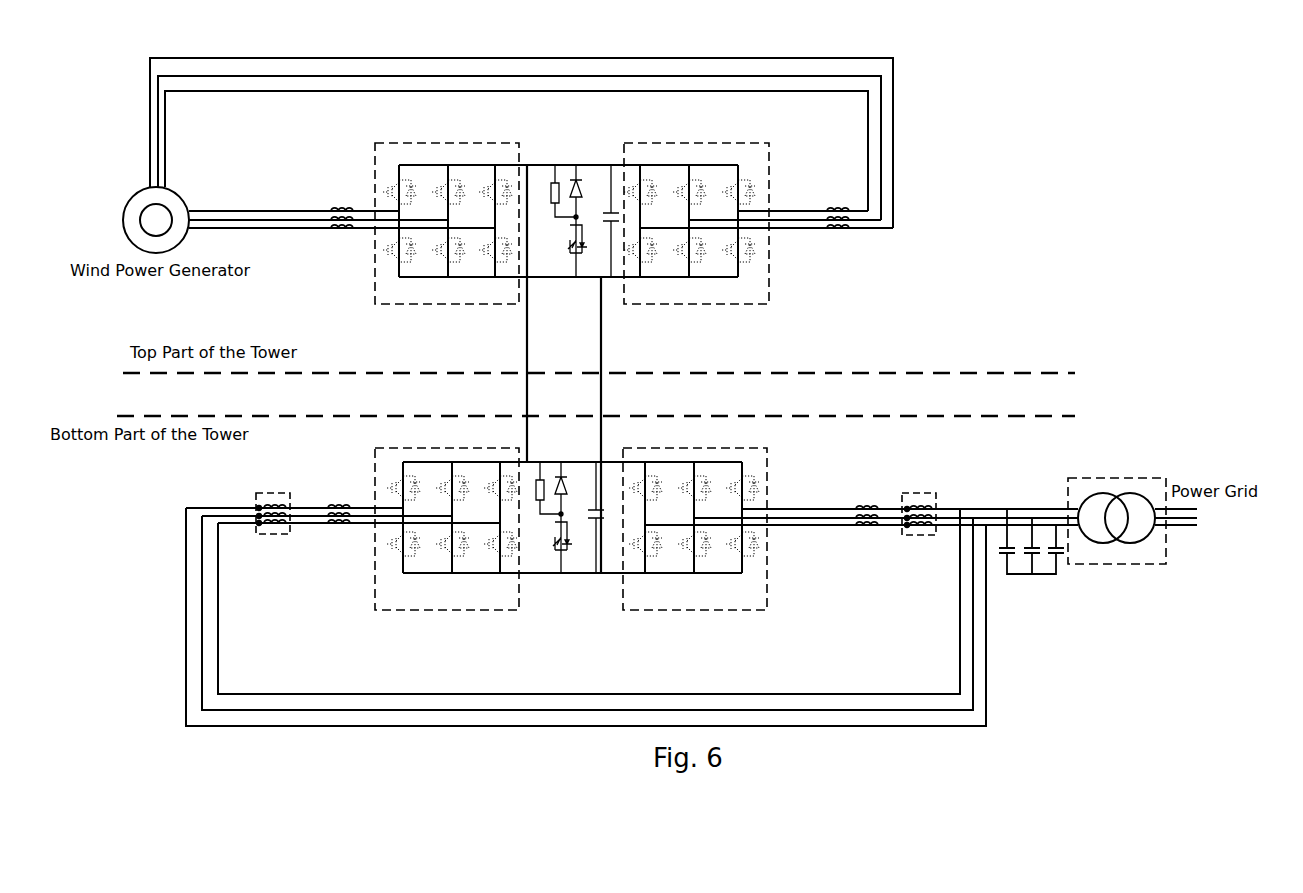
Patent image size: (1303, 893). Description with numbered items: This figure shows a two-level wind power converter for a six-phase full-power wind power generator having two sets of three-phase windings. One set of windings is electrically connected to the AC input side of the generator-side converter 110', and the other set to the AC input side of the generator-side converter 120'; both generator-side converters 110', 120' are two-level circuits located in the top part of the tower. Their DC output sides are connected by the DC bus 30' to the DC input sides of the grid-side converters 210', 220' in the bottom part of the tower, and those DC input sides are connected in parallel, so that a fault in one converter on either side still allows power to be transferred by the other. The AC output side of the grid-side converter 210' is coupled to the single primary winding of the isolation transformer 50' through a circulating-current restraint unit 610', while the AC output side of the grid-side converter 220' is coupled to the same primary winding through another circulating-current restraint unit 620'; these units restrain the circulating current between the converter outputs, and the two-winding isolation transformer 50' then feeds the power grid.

The generator-side converter 110' is at (451, 252).
The generator-side converter 120' is at (685, 252).
The DC bus 30' is at (573, 369).
The grid-side converter 210' is at (451, 557).
The grid-side converter 220' is at (684, 557).
The circulating-current restraint unit 610' is at (280, 481).
The circulating-current restraint unit 620' is at (924, 484).
The isolation transformer 50' is at (1132, 493).